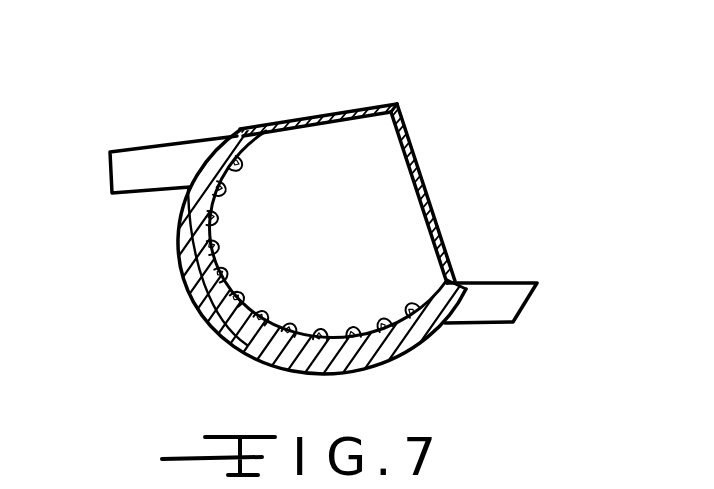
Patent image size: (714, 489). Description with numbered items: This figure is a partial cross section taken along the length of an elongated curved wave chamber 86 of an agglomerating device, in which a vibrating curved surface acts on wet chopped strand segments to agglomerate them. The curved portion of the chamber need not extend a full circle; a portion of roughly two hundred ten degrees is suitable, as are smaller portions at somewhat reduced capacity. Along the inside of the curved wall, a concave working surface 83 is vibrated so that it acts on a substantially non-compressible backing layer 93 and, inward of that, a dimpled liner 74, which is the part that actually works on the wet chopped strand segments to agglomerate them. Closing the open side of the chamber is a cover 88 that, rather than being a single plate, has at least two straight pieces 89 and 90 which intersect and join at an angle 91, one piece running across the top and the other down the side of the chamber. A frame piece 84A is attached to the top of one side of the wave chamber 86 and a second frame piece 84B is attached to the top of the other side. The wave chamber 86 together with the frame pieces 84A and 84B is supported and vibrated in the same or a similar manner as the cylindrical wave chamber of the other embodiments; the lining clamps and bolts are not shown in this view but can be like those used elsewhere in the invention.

The dimpled liner 74 is at (207, 273).
The concave working surface 83 is at (281, 332).
The frame piece 84A is at (163, 158).
The second frame piece 84B is at (495, 298).
The elongated curved wave chamber 86 is at (242, 340).
The cover 88 is at (420, 134).
The straight piece 89 is at (423, 186).
The straight piece 90 is at (300, 116).
The angle 91 is at (395, 106).
The substantially non-compressible backing layer 93 is at (205, 215).